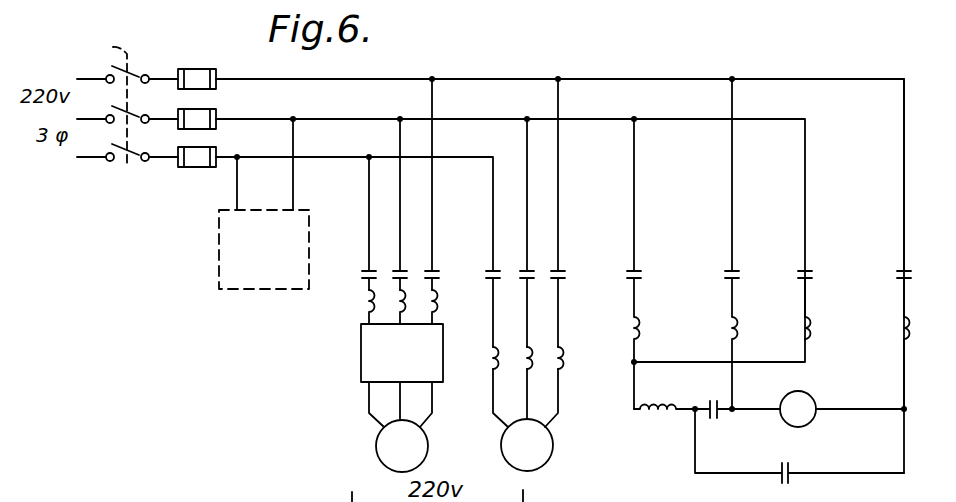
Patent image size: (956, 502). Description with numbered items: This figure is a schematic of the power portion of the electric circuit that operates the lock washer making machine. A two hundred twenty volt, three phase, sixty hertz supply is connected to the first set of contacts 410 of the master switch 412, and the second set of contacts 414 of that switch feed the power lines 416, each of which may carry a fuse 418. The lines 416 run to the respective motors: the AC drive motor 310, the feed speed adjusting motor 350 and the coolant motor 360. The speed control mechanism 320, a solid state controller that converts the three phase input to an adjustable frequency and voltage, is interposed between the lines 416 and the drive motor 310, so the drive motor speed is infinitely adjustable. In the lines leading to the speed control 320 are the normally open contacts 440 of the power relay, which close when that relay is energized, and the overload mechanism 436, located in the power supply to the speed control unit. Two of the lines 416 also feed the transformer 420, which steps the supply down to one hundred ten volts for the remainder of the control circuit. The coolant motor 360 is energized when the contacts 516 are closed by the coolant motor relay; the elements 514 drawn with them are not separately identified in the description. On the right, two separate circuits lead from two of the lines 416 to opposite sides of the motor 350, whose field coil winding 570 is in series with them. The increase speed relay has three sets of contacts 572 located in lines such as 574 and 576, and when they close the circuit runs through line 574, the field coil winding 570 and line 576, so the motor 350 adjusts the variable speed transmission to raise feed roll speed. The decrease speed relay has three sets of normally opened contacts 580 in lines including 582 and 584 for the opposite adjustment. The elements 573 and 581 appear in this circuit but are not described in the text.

The drive motor 310 is at (377, 442).
The speed control mechanism 320 is at (361, 355).
The motor 350 is at (800, 391).
The coolant motor 360 is at (553, 449).
The first set of contacts 410 is at (110, 161).
The master switch 412 is at (137, 184).
The second set of contacts 414 is at (147, 76).
The lines 416 is at (468, 157).
The fuses 418 is at (200, 168).
The transformer 420 is at (219, 268).
The overload mechanism 436 is at (364, 307).
The normally open contacts 440 is at (398, 266).
The overload relay heaters 514 is at (564, 356).
The contacts 516 is at (552, 263).
The field coil winding 570 is at (668, 415).
The contacts 572 is at (732, 250).
The capacitor 573 is at (840, 477).
The line 574 is at (634, 178).
The line 576 is at (732, 176).
The normally opened contacts 580 is at (904, 253).
The capacitor 581 is at (755, 410).
The line 582 is at (805, 166).
The line 584 is at (904, 139).